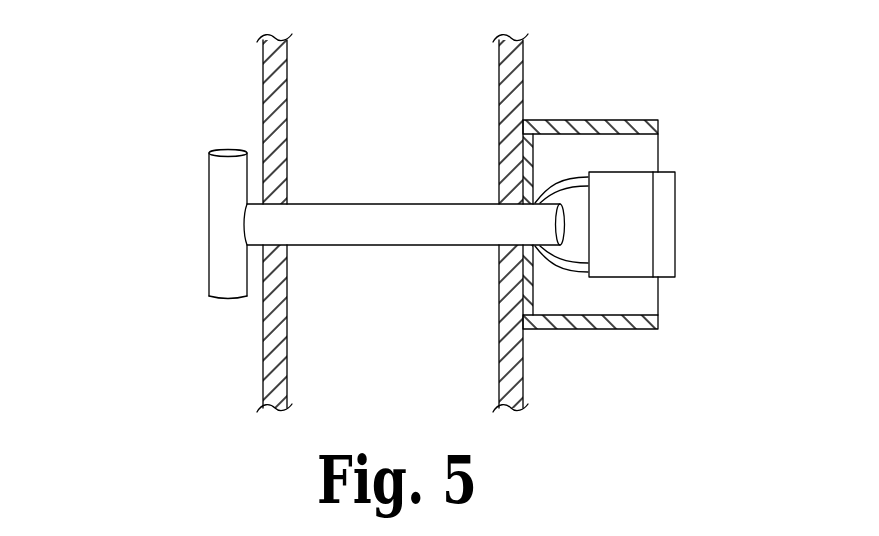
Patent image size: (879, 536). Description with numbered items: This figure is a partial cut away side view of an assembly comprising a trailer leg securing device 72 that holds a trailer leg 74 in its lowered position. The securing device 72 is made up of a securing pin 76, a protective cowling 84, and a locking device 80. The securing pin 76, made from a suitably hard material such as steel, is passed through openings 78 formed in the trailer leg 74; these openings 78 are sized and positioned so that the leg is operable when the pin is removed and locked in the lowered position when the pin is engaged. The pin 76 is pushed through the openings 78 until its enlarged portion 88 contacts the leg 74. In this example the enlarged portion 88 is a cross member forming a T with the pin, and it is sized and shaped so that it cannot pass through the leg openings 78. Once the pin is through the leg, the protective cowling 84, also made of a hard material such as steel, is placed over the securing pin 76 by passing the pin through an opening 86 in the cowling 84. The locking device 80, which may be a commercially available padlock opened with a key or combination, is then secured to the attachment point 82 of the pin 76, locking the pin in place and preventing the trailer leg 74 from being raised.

The trailer leg securing device 72 is at (133, 189).
The trailer leg 74 is at (287, 85).
The securing pin 76 is at (209, 279).
The openings 78 is at (289, 203).
The locking device 80 is at (663, 190).
The attachment point 82 is at (537, 200).
The protective cowling 84 is at (620, 330).
The opening 86 is at (538, 249).
The enlarged portion 88 is at (230, 151).